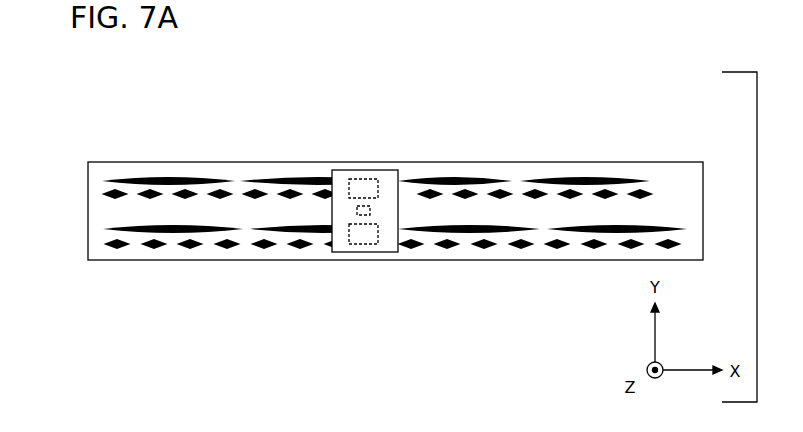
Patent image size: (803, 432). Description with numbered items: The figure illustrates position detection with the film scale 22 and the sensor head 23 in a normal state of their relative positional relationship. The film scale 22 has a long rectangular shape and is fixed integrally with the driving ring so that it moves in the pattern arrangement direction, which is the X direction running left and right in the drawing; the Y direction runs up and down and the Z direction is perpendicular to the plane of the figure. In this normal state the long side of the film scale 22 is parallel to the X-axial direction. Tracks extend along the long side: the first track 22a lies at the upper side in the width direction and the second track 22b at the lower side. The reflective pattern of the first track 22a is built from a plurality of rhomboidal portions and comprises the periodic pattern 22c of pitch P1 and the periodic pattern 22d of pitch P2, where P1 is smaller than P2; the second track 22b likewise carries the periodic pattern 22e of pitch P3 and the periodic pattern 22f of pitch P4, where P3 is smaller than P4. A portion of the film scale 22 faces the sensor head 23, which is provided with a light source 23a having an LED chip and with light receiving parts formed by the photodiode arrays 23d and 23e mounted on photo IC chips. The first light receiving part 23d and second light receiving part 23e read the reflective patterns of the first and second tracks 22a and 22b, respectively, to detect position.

The film scale 22 is at (670, 162).
The first track 22a is at (342, 155).
The second track 22b is at (359, 272).
The periodic pattern of pitch P1 22c is at (229, 191).
The periodic pattern of pitch P2 22d is at (181, 180).
The periodic pattern of pitch P3 22e is at (225, 246).
The periodic pattern of pitch P4 22f is at (175, 232).
The sensor head 23 is at (388, 170).
The light source 23a is at (371, 211).
The photodiode array 23d is at (362, 178).
The photodiode array 23e is at (358, 245).